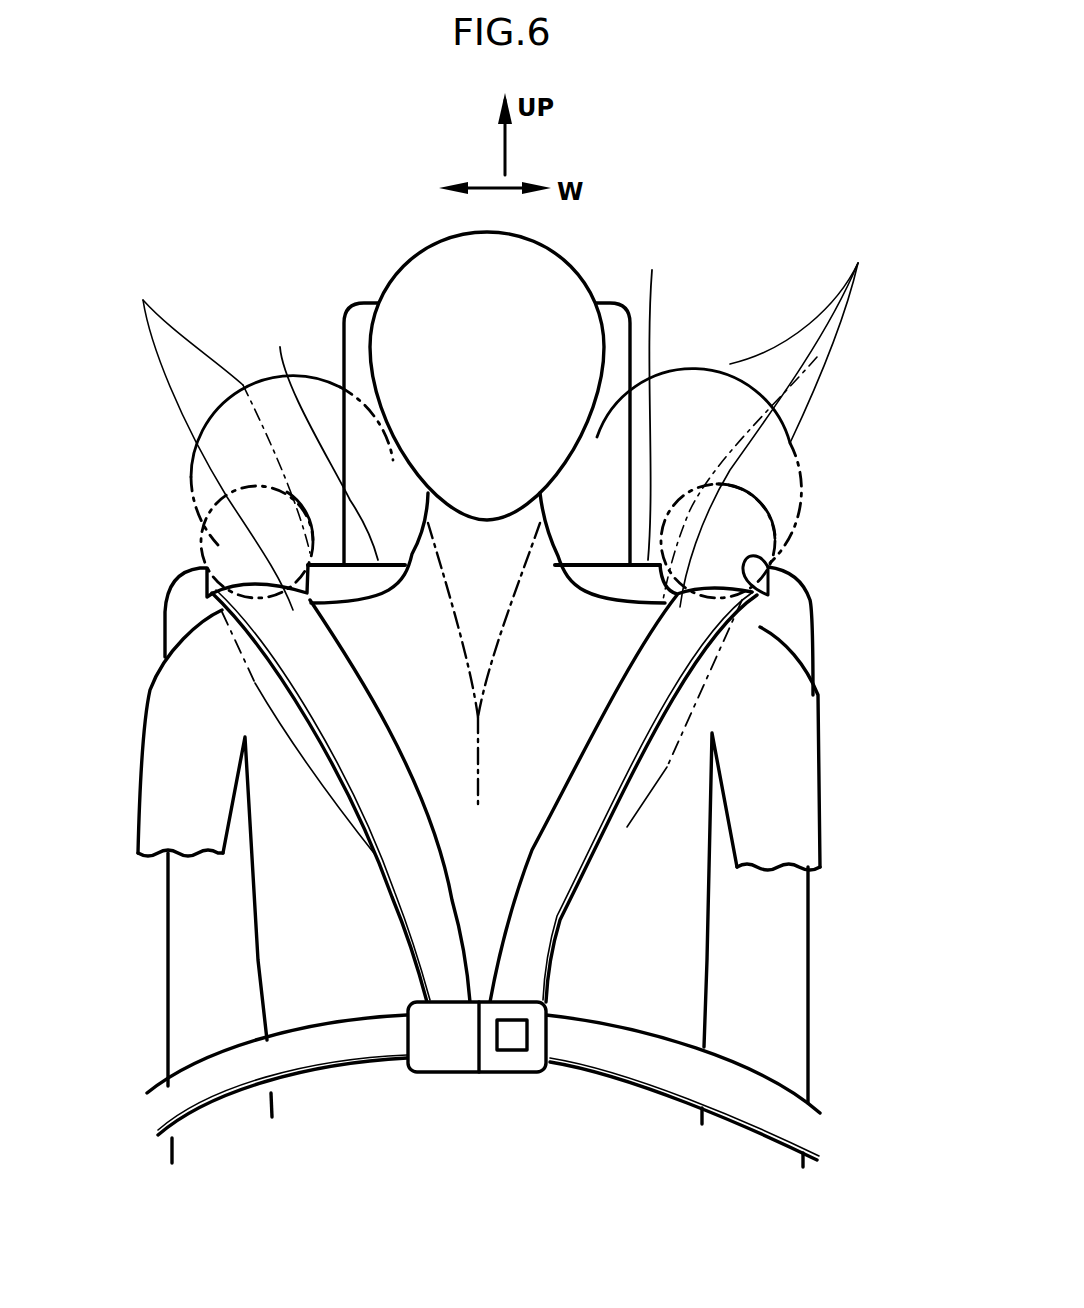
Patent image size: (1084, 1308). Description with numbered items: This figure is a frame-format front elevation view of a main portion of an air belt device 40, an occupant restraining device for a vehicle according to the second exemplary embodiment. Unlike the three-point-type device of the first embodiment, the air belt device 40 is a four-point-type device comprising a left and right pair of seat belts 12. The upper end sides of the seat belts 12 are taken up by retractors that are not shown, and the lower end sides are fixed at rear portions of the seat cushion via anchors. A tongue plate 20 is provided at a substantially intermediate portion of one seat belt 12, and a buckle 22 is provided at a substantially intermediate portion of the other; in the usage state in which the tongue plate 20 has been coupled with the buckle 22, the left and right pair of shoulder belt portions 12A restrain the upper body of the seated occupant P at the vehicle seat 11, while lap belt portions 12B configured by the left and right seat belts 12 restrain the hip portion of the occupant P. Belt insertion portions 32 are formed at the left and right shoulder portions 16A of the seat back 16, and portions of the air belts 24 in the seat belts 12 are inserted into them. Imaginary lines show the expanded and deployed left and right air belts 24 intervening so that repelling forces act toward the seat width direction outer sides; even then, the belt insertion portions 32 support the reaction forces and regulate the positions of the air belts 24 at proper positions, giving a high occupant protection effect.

The vehicle seat 11 is at (816, 648).
The seat belt 12 is at (390, 724).
The shoulder belt portion 12A is at (437, 863).
The lap belt portion 12B is at (320, 1040).
The seat back 16 is at (787, 1010).
The shoulder portion 16A is at (476, 397).
The tongue plate 20 is at (517, 1062).
The buckle 22 is at (445, 1050).
The air belt 24 is at (504, 422).
The belt insertion portion 32 is at (765, 556).
The air belt device 40 is at (814, 457).
The occupant P is at (823, 823).